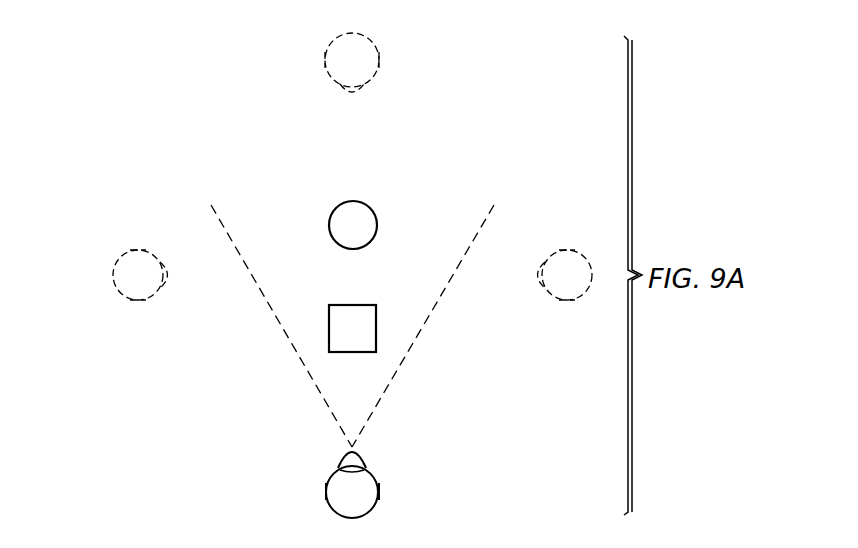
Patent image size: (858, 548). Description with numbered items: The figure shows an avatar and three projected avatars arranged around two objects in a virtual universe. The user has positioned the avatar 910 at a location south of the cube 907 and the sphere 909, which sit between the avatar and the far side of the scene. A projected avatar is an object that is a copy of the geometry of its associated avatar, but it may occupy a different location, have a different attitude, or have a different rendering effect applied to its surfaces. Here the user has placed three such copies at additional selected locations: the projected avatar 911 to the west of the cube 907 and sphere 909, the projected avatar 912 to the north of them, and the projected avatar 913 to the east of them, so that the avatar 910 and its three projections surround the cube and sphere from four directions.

The cube 907 is at (355, 305).
The sphere 909 is at (352, 201).
The avatar 910 is at (326, 490).
The projected avatar 911 is at (137, 302).
The projected avatar 912 is at (380, 60).
The projected avatar 913 is at (567, 250).